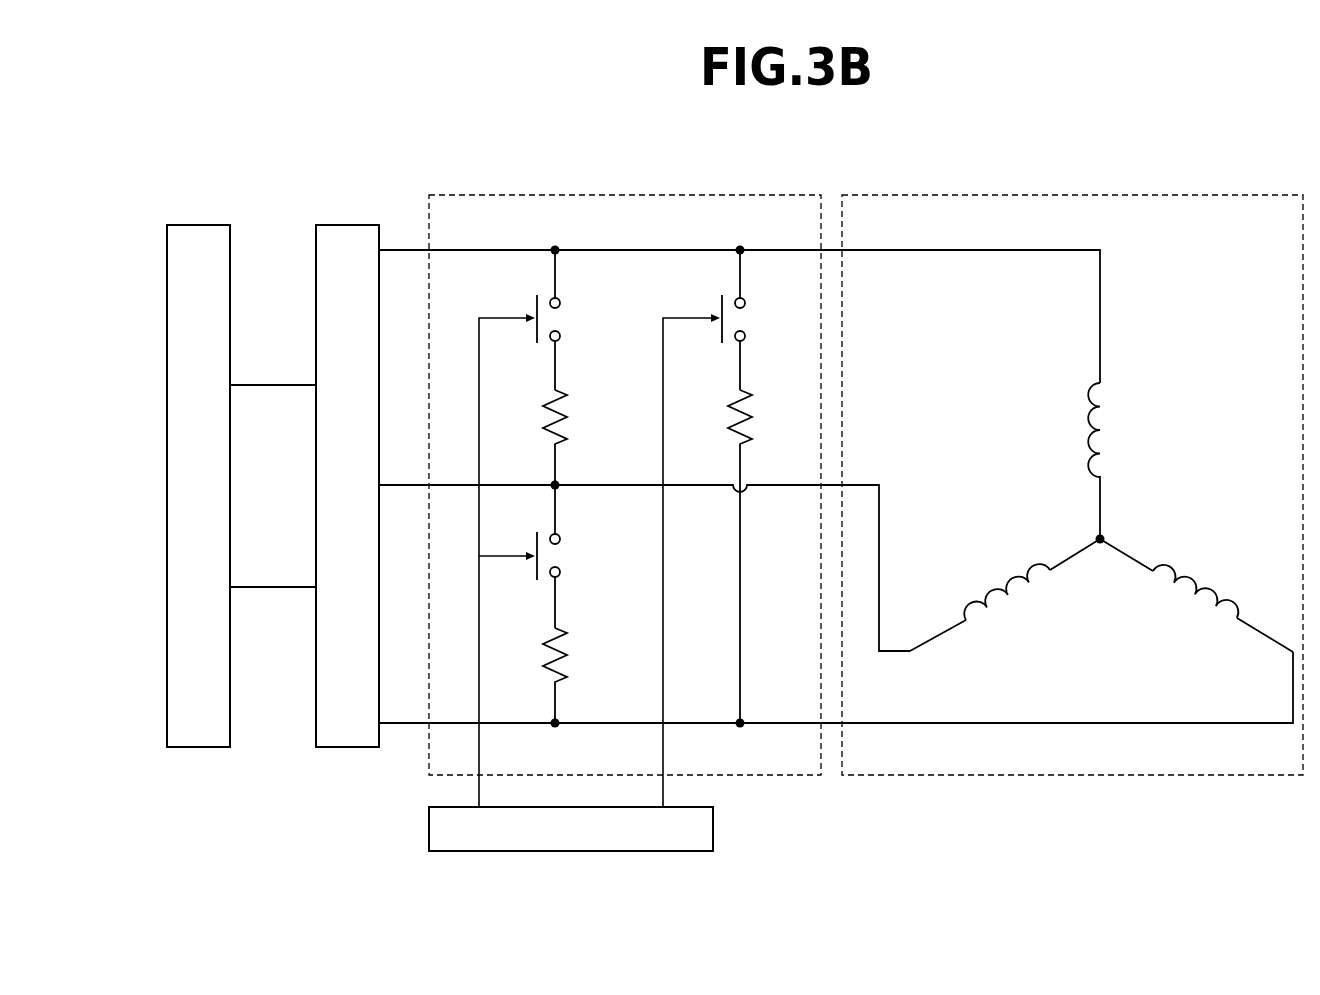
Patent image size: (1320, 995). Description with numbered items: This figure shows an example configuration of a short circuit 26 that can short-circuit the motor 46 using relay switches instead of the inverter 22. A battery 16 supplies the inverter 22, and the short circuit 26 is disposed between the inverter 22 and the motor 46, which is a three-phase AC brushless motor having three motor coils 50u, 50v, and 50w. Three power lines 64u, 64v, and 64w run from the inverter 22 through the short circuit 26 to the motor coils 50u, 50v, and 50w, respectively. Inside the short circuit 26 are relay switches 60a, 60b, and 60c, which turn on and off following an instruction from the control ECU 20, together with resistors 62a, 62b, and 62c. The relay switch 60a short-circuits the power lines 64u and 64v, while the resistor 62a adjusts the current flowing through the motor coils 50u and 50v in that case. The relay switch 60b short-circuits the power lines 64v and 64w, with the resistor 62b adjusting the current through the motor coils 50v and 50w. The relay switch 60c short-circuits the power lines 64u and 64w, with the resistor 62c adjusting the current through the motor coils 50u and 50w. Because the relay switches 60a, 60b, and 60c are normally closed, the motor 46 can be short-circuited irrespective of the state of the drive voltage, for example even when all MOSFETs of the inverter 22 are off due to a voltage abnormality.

The battery (BAT) 16 is at (197, 225).
The inverter 22 is at (340, 225).
The short circuit 26 is at (663, 195).
The motor 46 is at (1080, 195).
The control ECU 20 is at (429, 826).
The relay switch 60a is at (564, 320).
The relay switch 60b is at (564, 556).
The relay switch 60c is at (749, 320).
The resistor 62a is at (567, 425).
The resistor 62b is at (567, 662).
The resistor 62c is at (752, 425).
The power line 64u is at (933, 250).
The power line 64v is at (880, 525).
The power line 64w is at (1080, 723).
The motor coil 50u is at (1092, 383).
The motor coil 50v is at (964, 625).
The motor coil 50w is at (1245, 612).